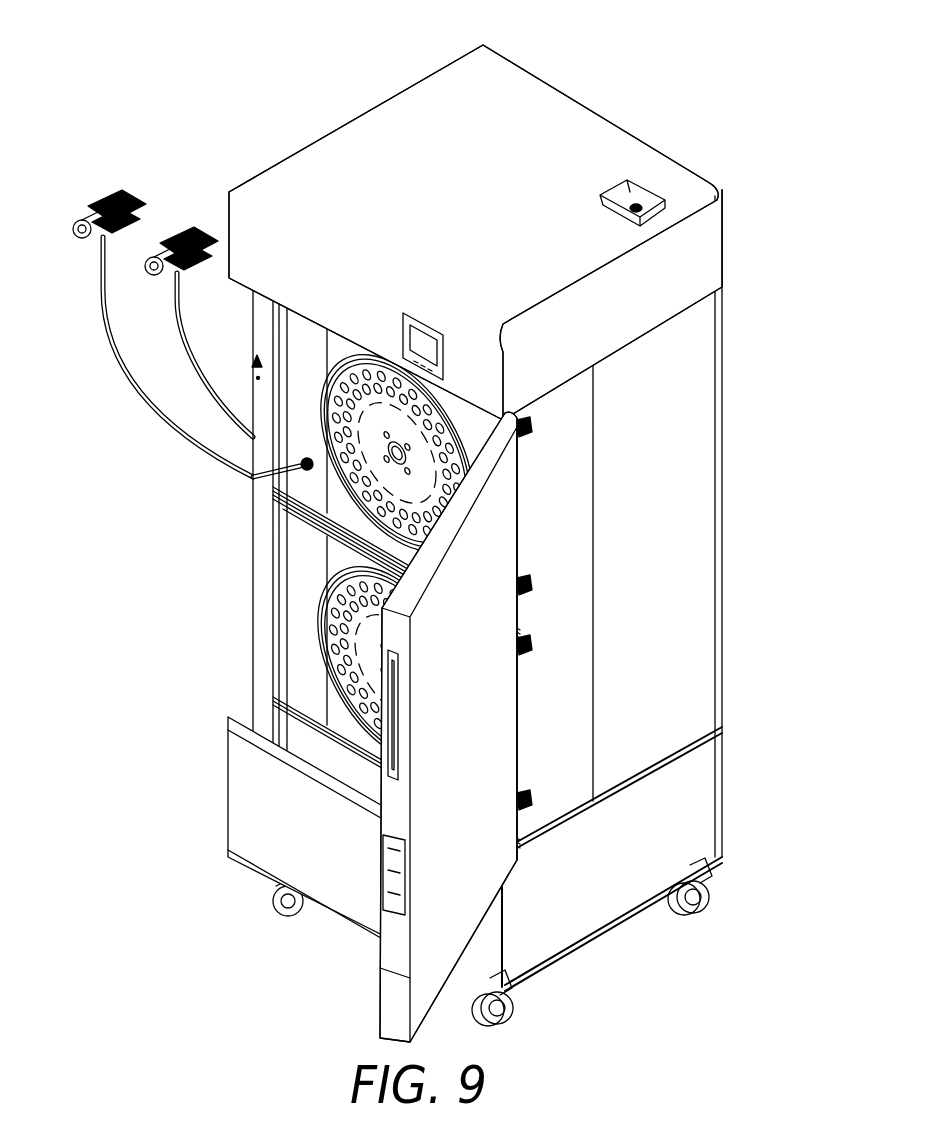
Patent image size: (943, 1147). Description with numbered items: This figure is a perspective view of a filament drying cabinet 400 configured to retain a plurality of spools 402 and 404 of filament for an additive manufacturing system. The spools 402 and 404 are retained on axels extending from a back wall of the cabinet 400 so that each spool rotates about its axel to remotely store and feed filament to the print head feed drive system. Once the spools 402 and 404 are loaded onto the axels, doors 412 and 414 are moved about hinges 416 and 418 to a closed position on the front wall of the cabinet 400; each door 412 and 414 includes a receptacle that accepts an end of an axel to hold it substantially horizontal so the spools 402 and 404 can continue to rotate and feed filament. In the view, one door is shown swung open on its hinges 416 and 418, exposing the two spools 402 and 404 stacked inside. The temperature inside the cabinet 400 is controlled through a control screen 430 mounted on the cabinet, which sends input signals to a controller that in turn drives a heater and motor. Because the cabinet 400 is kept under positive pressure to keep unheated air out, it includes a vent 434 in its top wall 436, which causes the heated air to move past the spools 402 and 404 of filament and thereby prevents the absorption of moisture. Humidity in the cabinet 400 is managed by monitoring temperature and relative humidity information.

The filament drying cabinet 400 is at (123, 47).
The spool 402 is at (320, 620).
The spool 404 is at (322, 432).
The door 412 is at (500, 735).
The door 414 is at (500, 510).
The hinge 416 is at (532, 648).
The hinge 418 is at (532, 430).
The control screen 430 is at (418, 333).
The vent 434 is at (632, 188).
The top wall 436 is at (578, 141).